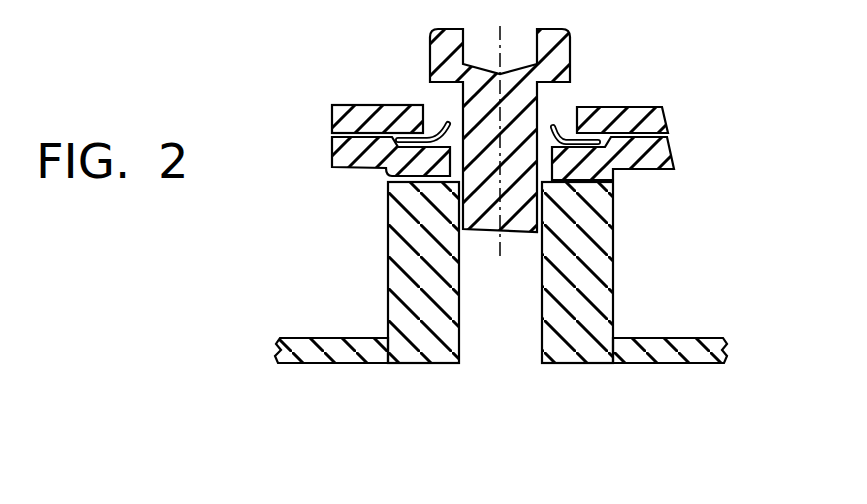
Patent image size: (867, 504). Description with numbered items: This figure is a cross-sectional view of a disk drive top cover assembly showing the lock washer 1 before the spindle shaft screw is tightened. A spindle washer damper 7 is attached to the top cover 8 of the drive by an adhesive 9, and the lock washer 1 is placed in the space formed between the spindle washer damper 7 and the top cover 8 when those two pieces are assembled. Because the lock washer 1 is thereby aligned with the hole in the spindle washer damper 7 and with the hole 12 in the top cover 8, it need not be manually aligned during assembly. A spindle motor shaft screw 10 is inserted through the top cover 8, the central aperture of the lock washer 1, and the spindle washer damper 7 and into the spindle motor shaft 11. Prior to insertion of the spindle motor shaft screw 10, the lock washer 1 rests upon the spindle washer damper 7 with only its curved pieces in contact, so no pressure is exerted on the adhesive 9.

The lock washer 1 is at (440, 127).
The spindle washer damper 7 is at (342, 170).
The top cover 8 is at (349, 105).
The adhesive 9 is at (332, 135).
The spindle motor shaft screw 10 is at (487, 232).
The spindle motor shaft 11 is at (388, 248).
The hole 12 is at (553, 103).